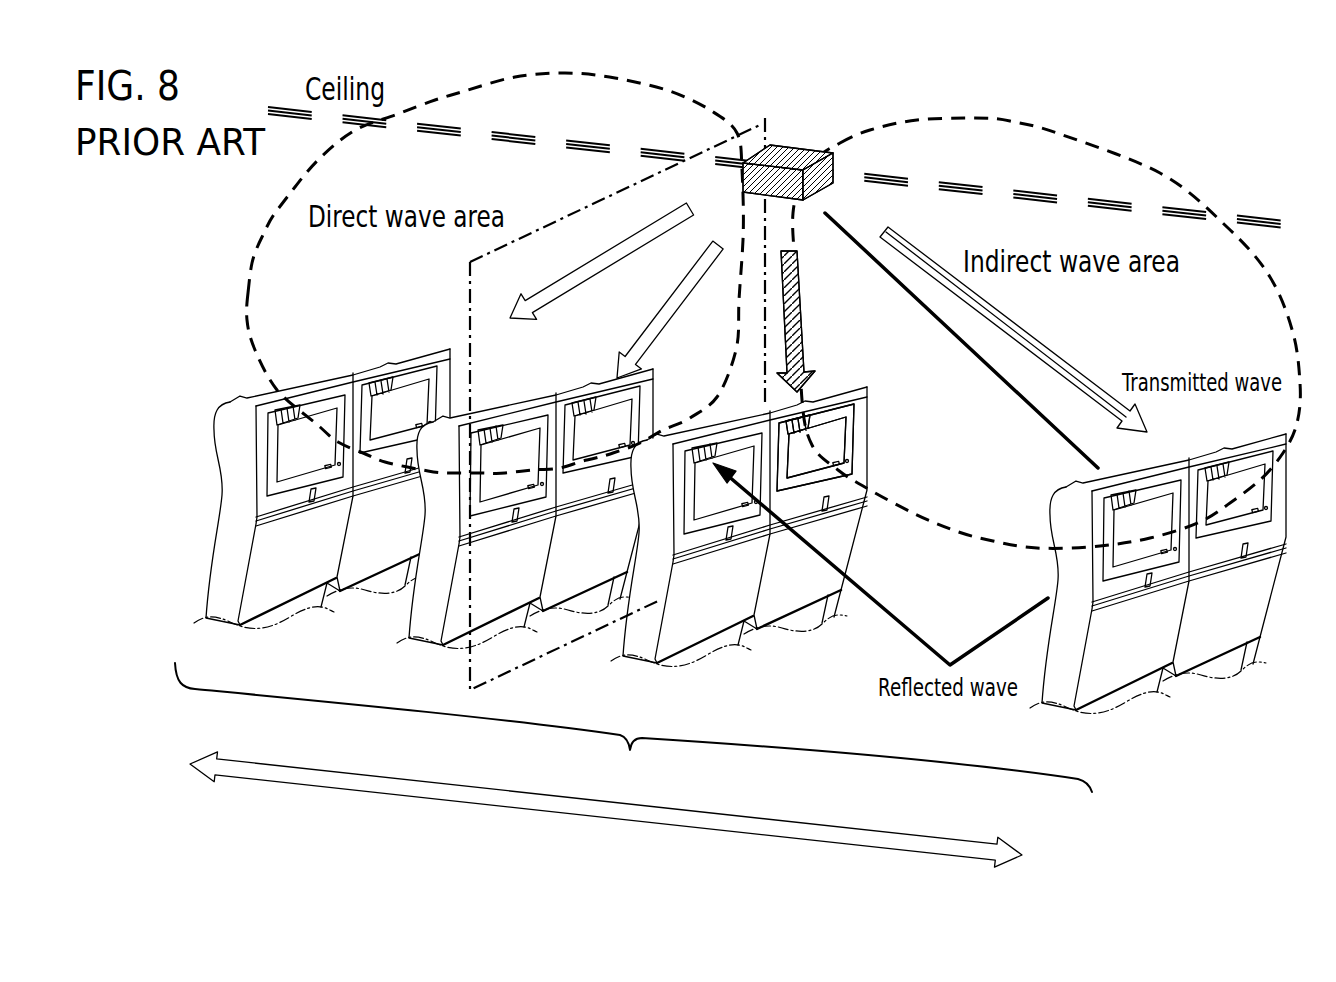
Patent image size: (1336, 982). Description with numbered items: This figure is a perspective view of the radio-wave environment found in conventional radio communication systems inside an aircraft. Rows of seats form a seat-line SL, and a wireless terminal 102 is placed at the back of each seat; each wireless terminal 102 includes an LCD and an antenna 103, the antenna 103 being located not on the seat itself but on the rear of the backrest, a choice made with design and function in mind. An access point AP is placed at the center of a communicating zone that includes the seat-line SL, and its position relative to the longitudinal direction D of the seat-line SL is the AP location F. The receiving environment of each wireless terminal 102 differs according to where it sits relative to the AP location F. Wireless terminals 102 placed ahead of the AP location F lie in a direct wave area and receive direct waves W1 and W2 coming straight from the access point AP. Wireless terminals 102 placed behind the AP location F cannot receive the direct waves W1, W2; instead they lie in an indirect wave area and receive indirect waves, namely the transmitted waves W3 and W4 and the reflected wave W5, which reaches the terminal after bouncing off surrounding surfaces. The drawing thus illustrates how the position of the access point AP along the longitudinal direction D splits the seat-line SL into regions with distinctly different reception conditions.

The wireless terminal 102 is at (841, 436).
The antenna 103 is at (803, 429).
The access point AP is at (788, 154).
The direct wave W1 is at (602, 261).
The direct wave W2 is at (660, 309).
The transmitted wave W3 is at (811, 321).
The transmitted wave W4 is at (986, 340).
The reflected wave W5 is at (880, 564).
The AP location F is at (562, 650).
The seat-line SL is at (633, 727).
The longitudinal direction D is at (606, 809).